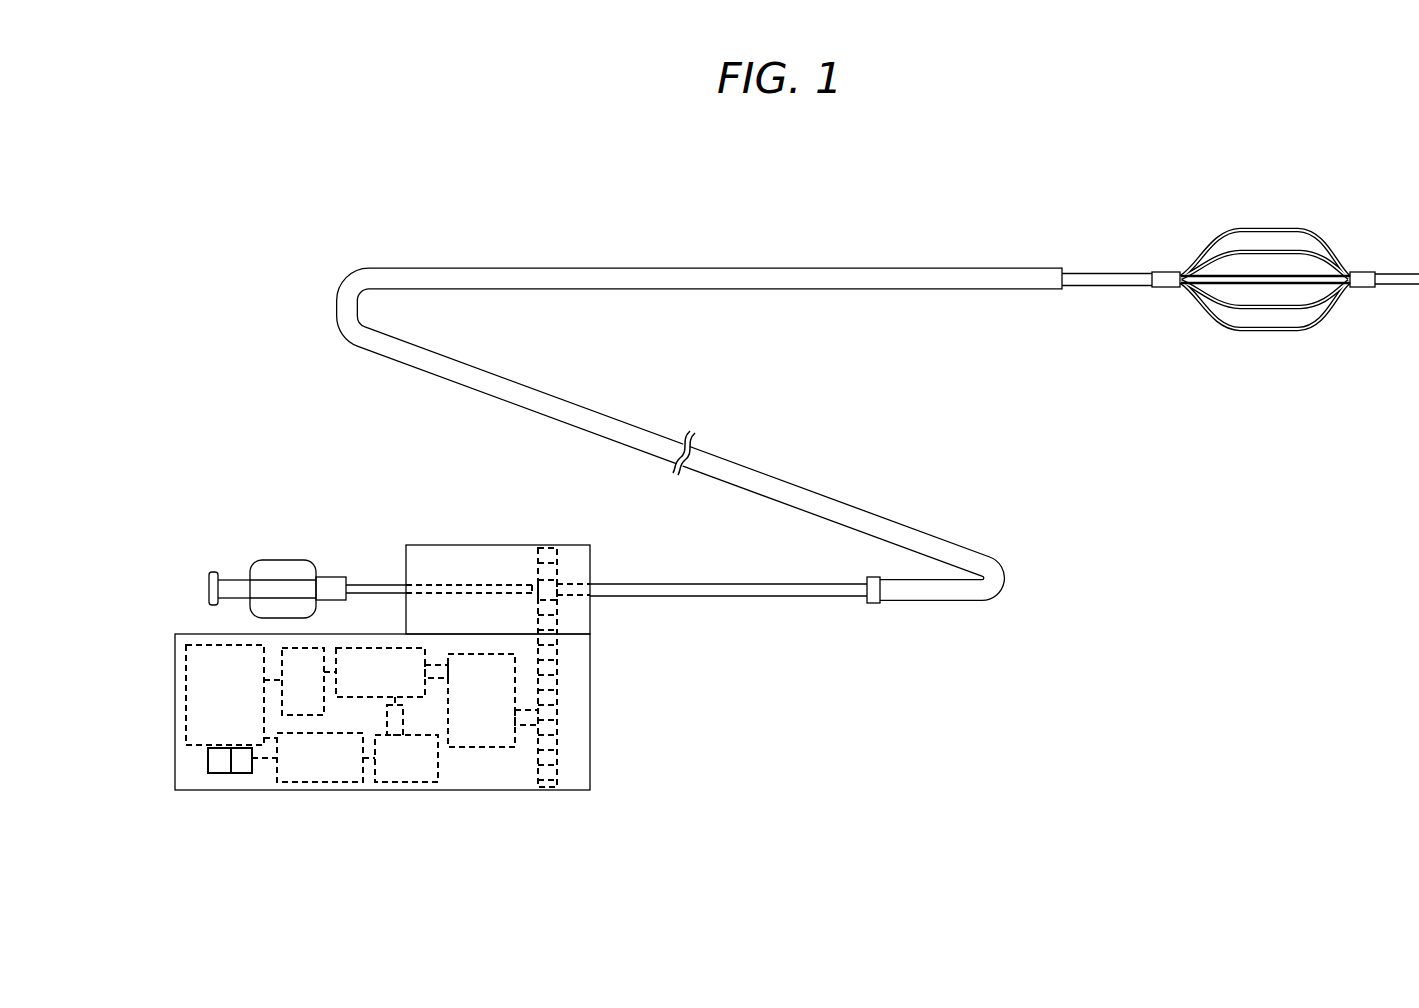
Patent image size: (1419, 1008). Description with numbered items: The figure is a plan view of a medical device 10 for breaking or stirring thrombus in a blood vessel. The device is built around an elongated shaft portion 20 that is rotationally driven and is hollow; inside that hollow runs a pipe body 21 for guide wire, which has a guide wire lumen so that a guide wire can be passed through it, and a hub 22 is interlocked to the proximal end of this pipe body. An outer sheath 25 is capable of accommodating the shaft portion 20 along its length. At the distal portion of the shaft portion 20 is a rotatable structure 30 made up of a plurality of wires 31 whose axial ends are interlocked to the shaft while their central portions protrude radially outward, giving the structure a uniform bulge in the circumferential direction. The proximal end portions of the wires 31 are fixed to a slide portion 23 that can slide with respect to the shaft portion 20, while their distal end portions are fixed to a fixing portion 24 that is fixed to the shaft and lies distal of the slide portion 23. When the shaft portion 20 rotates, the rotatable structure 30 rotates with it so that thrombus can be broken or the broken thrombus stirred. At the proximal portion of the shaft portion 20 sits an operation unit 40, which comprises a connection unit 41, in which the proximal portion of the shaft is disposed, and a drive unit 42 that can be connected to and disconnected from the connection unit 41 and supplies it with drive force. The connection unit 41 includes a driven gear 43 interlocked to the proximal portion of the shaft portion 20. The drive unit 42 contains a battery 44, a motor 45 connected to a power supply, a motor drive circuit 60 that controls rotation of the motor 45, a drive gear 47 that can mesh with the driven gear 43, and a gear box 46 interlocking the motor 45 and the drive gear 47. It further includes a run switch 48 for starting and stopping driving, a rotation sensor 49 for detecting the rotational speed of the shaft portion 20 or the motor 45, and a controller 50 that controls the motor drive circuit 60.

The medical device 10 is at (1411, 164).
The shaft portion 20 is at (1083, 274).
The pipe body for guide wire 21 is at (365, 586).
The hub 22 is at (279, 582).
The slide portion 23 is at (1163, 289).
The fixing portion 24 is at (1362, 289).
The outer sheath 25 is at (970, 274).
The rotatable structure 30 is at (1261, 234).
The wires 31 is at (1269, 252).
The operation unit 40 is at (392, 657).
The connection unit 41 is at (503, 556).
The drive unit 42 is at (392, 751).
The driven gear 43 is at (545, 548).
The battery 44 is at (205, 692).
The motor 45 is at (390, 700).
The gear box 46 is at (490, 735).
The drive gear 47 is at (548, 786).
The run switch 48 is at (243, 776).
The rotation sensor 49 is at (415, 765).
The controller 50 is at (330, 765).
The motor drive circuit 60 is at (305, 712).